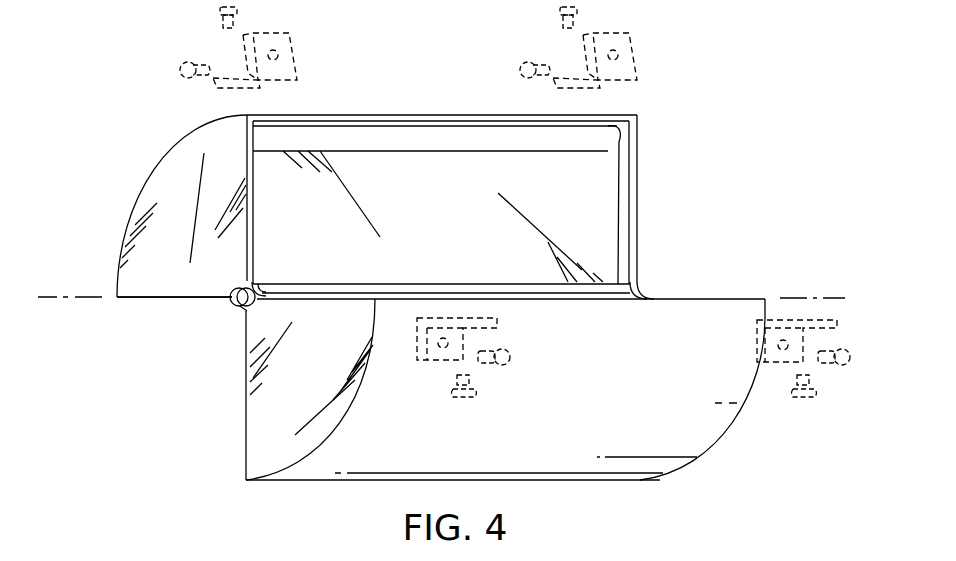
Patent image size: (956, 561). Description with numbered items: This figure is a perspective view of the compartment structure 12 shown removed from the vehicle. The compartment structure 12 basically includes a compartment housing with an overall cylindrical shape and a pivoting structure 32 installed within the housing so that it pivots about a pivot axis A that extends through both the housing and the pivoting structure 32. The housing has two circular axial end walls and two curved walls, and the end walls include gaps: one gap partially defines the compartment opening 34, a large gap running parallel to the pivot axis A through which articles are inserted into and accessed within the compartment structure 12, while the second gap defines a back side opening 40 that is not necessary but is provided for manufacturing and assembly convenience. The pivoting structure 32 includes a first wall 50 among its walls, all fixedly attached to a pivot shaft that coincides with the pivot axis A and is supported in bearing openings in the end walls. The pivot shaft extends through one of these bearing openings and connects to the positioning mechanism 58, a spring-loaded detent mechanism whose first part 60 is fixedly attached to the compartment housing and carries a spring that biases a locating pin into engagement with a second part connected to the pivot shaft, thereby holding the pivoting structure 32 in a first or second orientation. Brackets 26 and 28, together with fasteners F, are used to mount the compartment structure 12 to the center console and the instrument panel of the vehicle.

The compartment structure 12 is at (135, 163).
The bracket 26 is at (270, 32).
The bracket 28 is at (440, 364).
The pivoting structure 32 is at (476, 179).
The compartment opening 34 is at (253, 233).
The back side opening 40 is at (164, 300).
The first wall 50 is at (404, 178).
The positioning mechanism 58 is at (233, 292).
The first part 60 is at (243, 312).
The fastener F is at (186, 60).
The pivot axis A is at (45, 299).